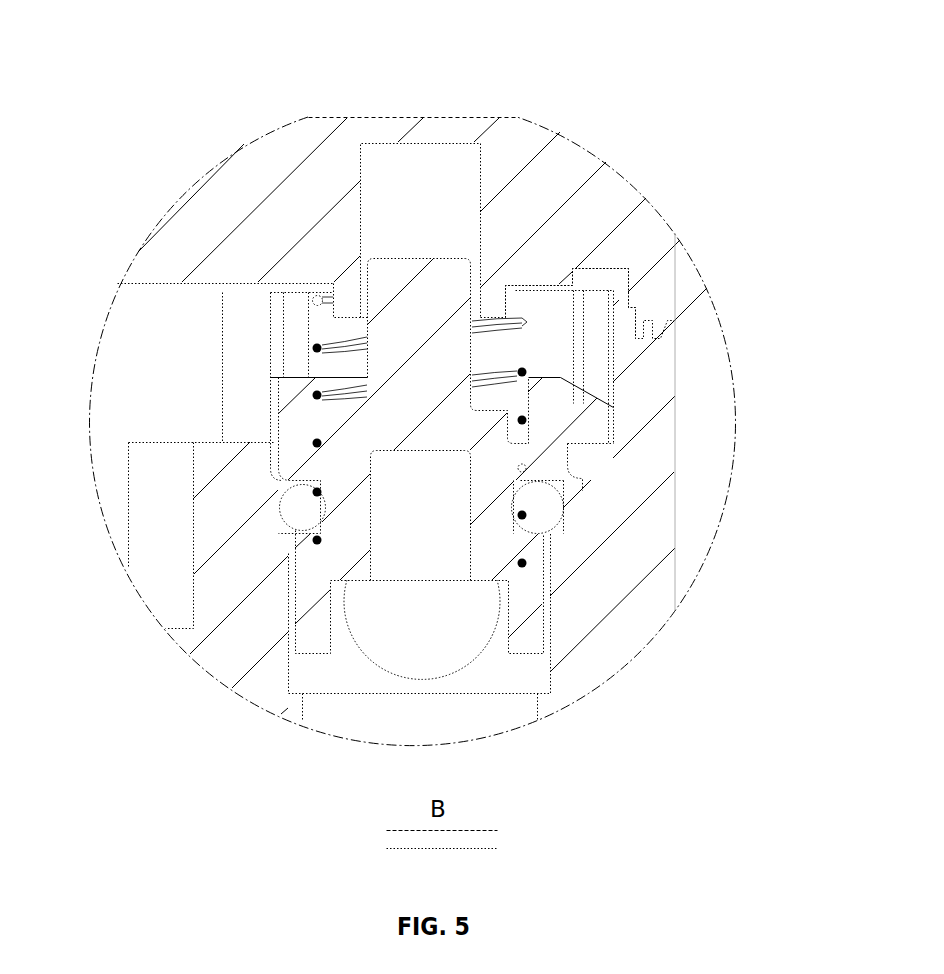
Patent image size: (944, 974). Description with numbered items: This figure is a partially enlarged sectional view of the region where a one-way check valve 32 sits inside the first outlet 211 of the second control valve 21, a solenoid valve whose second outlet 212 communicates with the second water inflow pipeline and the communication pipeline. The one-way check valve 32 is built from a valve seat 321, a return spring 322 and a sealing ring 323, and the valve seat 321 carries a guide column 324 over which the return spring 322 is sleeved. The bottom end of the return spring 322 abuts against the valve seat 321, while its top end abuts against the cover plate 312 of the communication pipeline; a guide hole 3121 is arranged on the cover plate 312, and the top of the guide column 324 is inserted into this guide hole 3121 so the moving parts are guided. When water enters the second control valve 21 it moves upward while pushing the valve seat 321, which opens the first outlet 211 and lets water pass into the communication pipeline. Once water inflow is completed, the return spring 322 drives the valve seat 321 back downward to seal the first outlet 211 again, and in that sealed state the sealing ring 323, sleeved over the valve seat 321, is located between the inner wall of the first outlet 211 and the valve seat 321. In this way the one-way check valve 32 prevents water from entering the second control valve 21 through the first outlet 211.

The cover plate 312 is at (237, 205).
The guide hole 3121 is at (428, 155).
The valve seat 321 is at (557, 423).
The return spring 322 is at (523, 370).
The sealing ring 323 is at (550, 503).
The guide column 324 is at (417, 328).
The one-way check valve 32 is at (834, 228).
The first outlet 211 is at (292, 552).
The second control valve 21 is at (260, 670).
The second outlet 212 is at (425, 632).